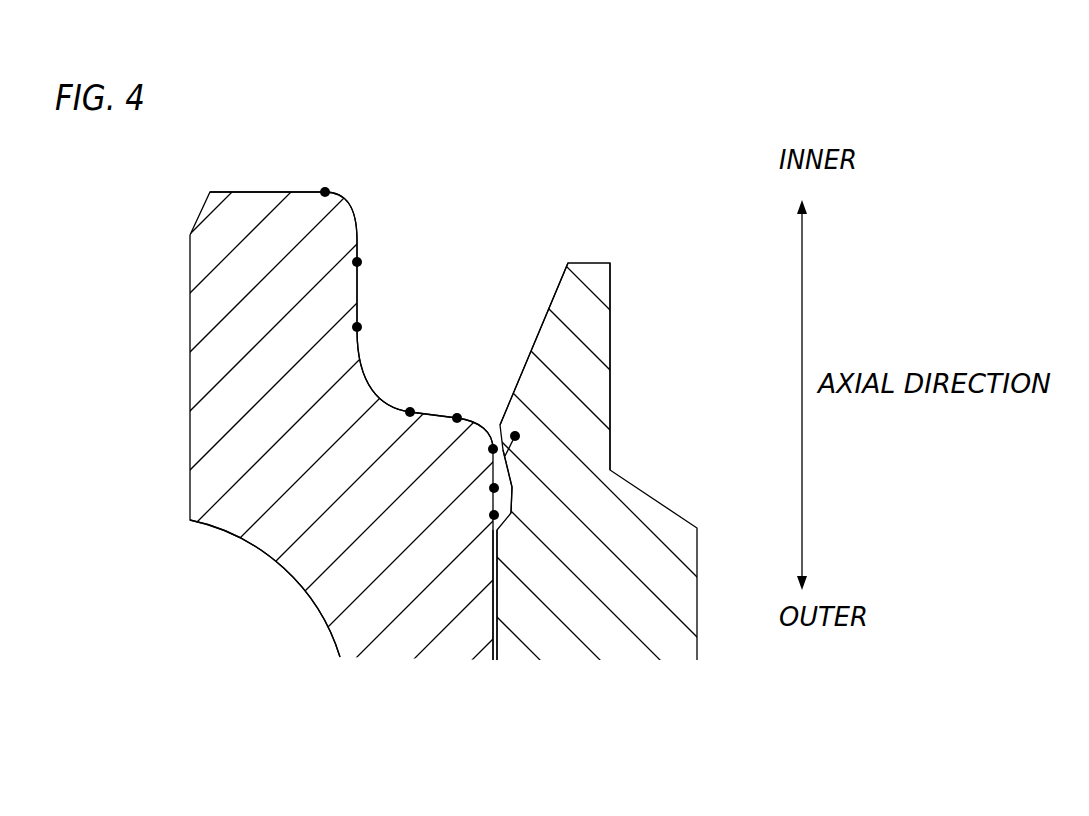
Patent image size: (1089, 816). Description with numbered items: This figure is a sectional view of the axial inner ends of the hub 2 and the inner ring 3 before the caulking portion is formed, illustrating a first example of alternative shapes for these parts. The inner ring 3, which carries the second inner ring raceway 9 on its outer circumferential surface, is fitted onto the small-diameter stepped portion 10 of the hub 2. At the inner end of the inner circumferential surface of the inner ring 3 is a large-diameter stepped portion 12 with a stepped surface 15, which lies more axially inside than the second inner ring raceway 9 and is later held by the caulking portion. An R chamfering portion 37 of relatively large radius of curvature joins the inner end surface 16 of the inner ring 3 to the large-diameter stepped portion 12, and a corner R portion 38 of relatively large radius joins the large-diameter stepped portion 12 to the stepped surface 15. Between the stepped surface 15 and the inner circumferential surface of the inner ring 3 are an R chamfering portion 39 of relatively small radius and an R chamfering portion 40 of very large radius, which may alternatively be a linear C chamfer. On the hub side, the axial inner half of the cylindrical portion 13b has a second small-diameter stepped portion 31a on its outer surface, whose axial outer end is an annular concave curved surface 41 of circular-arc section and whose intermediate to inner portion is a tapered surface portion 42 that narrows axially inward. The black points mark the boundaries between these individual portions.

The hub 2 is at (590, 605).
The inner ring 3 is at (390, 590).
The second inner ring raceway 9 is at (265, 562).
The small-diameter stepped portion 10 is at (490, 612).
The large-diameter stepped portion 12 is at (357, 297).
The cylindrical portion 13b is at (577, 416).
The stepped surface 15 is at (437, 417).
The inner end surface 16 is at (257, 192).
The second small-diameter stepped portion 31a is at (500, 423).
The R chamfering portion 37 is at (357, 228).
The corner R portion 38 is at (368, 375).
The R chamfering portion 39 is at (493, 449).
The R chamfering portion 40 is at (507, 473).
The annular concave curved surface 41 is at (503, 482).
The tapered surface portion 42 is at (515, 436).